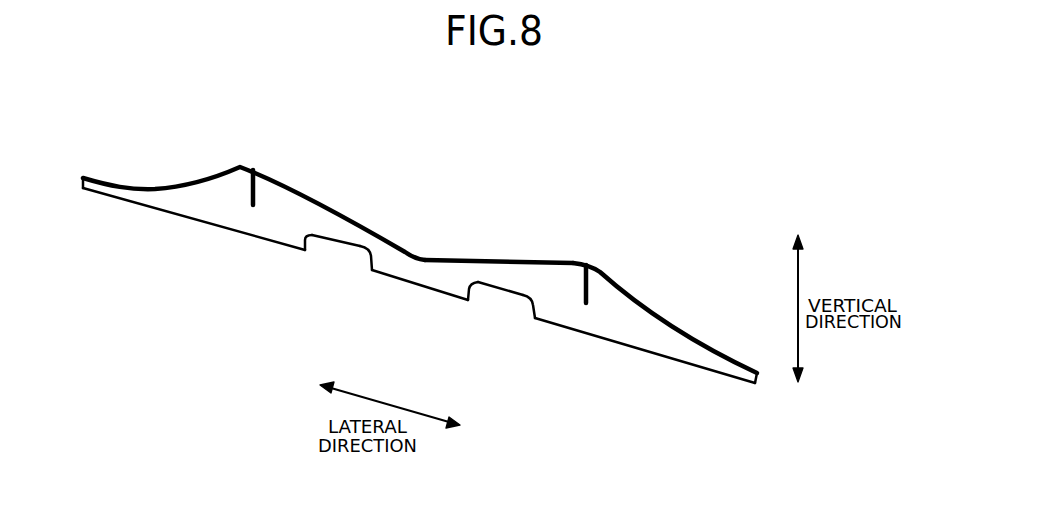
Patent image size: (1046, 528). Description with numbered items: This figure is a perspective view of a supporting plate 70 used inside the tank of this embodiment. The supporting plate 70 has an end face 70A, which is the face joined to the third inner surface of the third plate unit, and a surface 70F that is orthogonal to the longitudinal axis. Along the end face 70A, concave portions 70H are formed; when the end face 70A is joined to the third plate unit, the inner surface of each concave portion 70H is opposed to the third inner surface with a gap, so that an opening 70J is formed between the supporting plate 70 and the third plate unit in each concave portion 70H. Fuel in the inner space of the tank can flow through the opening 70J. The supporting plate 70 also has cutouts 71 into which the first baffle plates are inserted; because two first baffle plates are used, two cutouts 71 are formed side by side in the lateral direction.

The supporting plate 70 is at (692, 228).
The end face 70A is at (598, 338).
The surface 70F is at (428, 266).
The concave portion 70H is at (337, 243).
The opening 70J is at (320, 250).
The cutout 71 is at (253, 172).